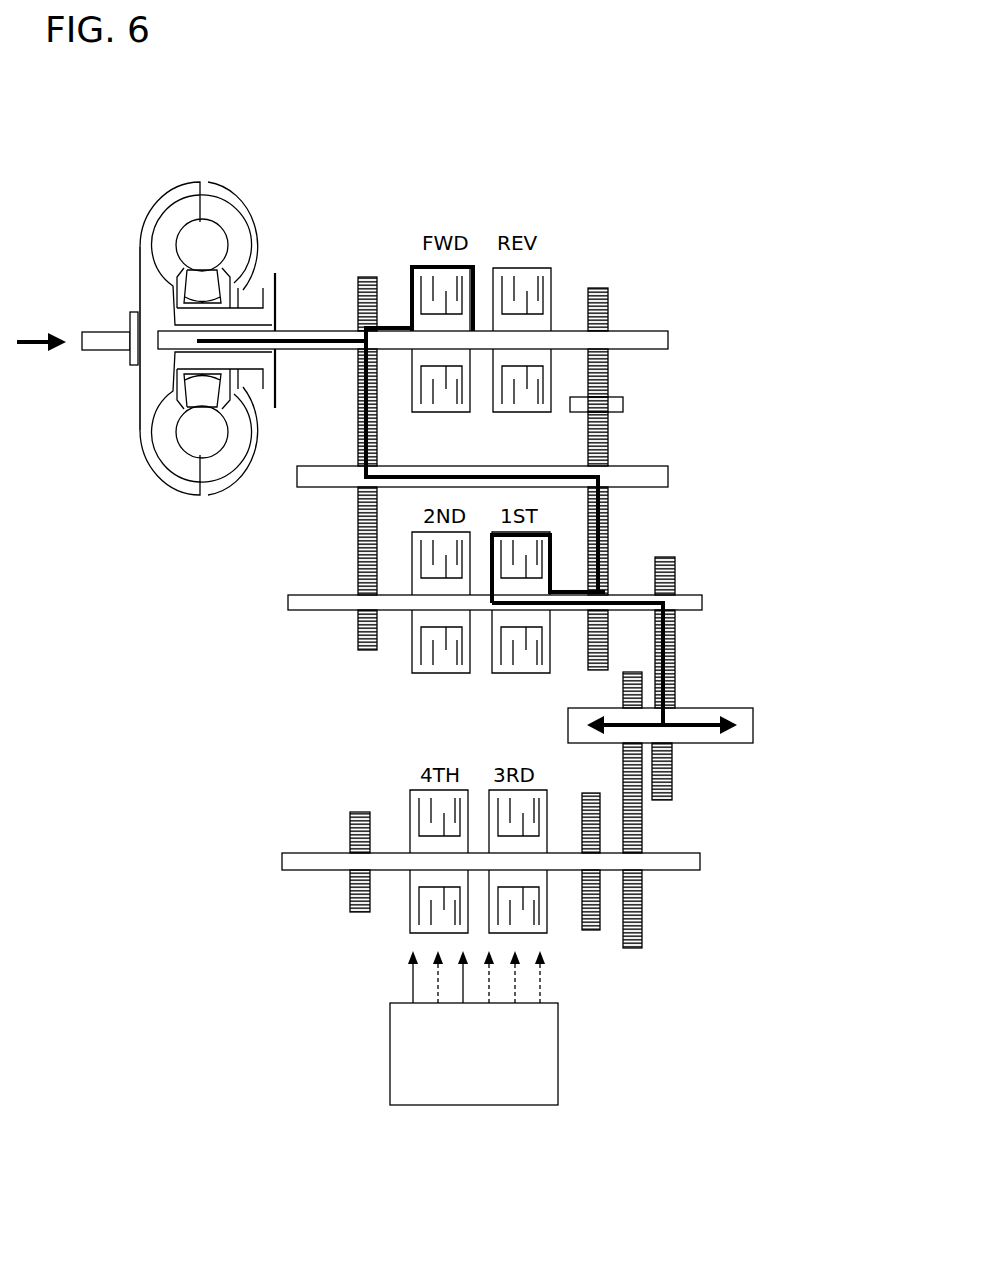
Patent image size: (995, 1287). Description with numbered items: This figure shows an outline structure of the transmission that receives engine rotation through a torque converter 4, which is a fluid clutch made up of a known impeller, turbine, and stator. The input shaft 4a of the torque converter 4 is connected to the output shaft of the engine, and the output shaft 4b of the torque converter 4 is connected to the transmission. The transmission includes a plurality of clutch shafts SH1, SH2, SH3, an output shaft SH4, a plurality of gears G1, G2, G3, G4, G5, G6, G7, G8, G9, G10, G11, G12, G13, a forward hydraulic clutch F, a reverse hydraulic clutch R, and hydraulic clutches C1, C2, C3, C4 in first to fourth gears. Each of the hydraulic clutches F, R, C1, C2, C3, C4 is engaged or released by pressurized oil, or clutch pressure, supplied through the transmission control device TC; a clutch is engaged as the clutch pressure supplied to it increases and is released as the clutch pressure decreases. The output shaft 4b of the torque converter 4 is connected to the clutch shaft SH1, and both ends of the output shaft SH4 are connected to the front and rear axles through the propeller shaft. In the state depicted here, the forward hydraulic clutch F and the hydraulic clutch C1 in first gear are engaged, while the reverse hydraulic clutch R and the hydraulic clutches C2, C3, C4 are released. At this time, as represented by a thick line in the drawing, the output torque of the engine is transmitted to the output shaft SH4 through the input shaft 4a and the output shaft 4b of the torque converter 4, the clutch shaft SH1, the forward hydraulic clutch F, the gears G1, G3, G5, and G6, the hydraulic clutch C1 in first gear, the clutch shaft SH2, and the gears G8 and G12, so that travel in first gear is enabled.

The torque converter 4 is at (186, 180).
The input shaft 4a is at (102, 330).
The output shaft 4b is at (300, 330).
The clutch shaft SH1 is at (653, 328).
The clutch shaft SH2 is at (700, 597).
The clutch shaft SH3 is at (685, 850).
The output shaft SH4 is at (743, 708).
The gear G1 is at (357, 288).
The gear G2 is at (602, 288).
The gear G3 is at (355, 420).
The gear G4 is at (607, 393).
The gear G5 is at (607, 443).
The gear G6 is at (603, 535).
The gear G7 is at (353, 580).
The gear G8 is at (673, 565).
The gear G9 is at (585, 932).
The gear G10 is at (360, 812).
The gear G11 is at (640, 930).
The gear G12 is at (675, 680).
The gear G13 is at (620, 750).
The forward hydraulic clutch F is at (412, 270).
The reverse hydraulic clutch R is at (543, 283).
The hydraulic clutch in first gear C1 is at (518, 670).
The hydraulic clutch in second gear C2 is at (428, 670).
The hydraulic clutch in third gear C3 is at (500, 932).
The hydraulic clutch in fourth gear C4 is at (420, 793).
The transmission control device TC is at (490, 1105).